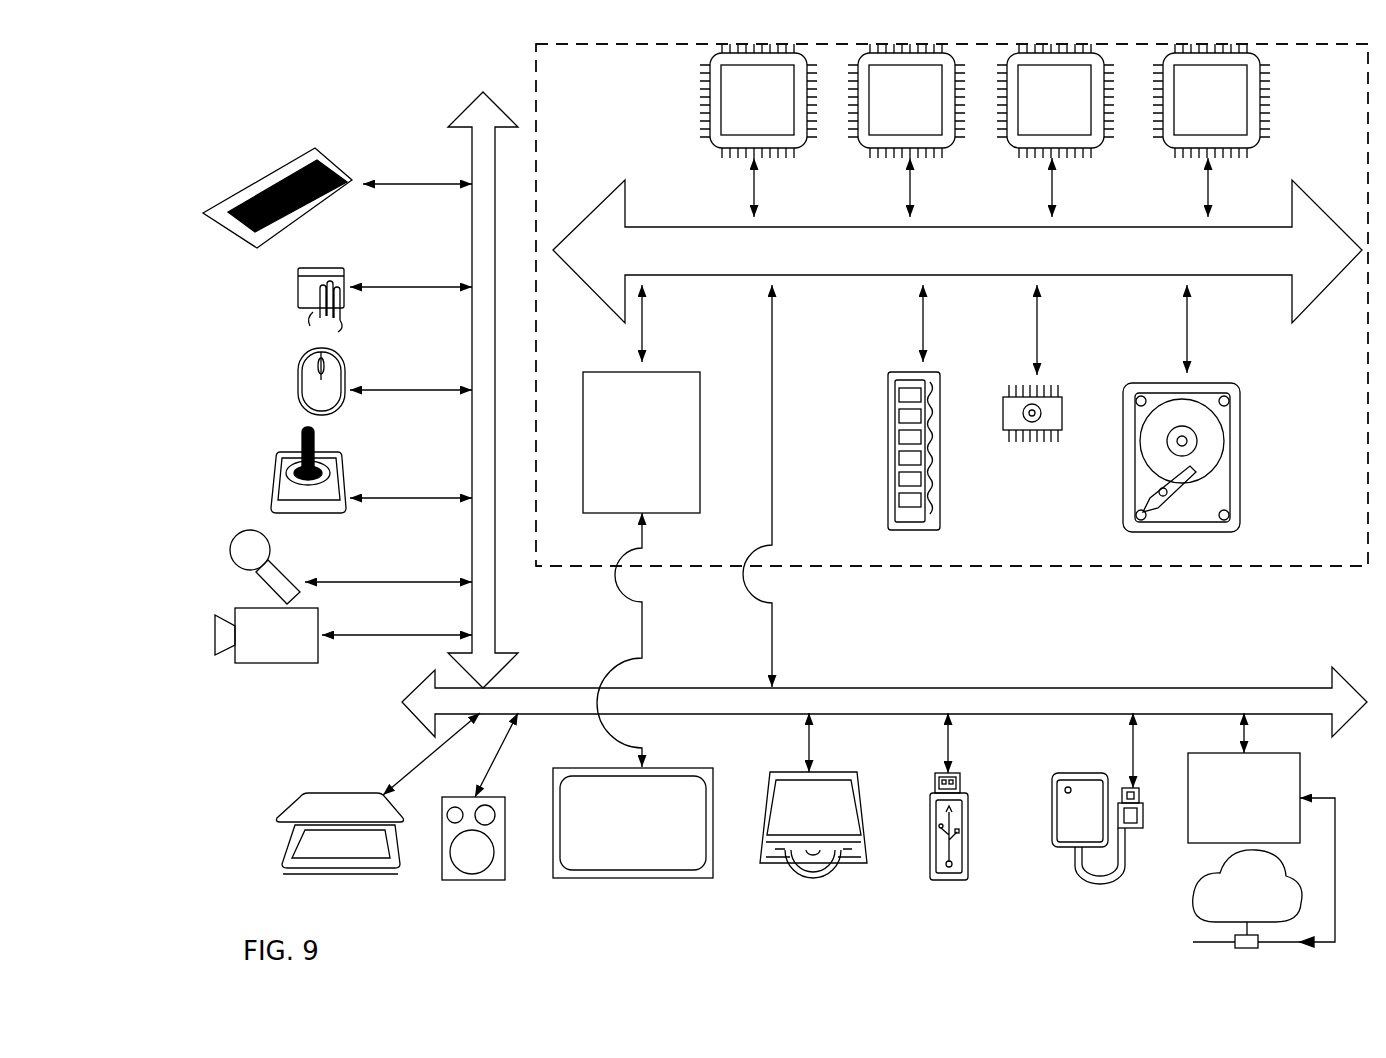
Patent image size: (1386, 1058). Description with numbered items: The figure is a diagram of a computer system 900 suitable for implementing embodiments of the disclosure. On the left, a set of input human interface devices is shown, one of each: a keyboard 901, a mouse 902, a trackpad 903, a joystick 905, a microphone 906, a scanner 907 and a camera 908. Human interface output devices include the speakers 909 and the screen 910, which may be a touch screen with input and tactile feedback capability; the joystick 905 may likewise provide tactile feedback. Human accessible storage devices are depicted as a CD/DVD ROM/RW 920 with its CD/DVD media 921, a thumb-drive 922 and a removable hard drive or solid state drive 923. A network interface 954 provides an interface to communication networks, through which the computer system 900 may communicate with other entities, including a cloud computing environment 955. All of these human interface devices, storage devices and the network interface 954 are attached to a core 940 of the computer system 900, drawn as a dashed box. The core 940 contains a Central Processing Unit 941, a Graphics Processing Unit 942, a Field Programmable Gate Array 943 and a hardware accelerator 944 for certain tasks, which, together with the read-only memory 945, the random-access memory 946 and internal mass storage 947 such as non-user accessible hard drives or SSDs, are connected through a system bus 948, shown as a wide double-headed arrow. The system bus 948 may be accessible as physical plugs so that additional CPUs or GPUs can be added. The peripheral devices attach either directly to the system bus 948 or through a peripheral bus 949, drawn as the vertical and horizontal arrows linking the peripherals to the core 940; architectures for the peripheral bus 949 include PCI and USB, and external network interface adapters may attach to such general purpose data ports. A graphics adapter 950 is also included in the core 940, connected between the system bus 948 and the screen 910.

The computer system 900 is at (796, 305).
The keyboard 901 is at (205, 212).
The mouse 902 is at (290, 385).
The trackpad 903 is at (290, 298).
The joystick 905 is at (272, 493).
The microphone 906 is at (230, 565).
The scanner 907 is at (280, 860).
The camera 908 is at (215, 635).
The speakers 909 is at (472, 881).
The touch screen 910 is at (625, 878).
The CD/DVD ROM/RW 920 is at (852, 870).
The CD/DVD media 921 is at (790, 875).
The thumb-drive 922 is at (945, 880).
The removable hard drive or solid state drive 923 is at (1060, 848).
The core 940 is at (975, 567).
The Central Processing Unit 941 is at (758, 130).
The Graphics Processing Unit 942 is at (906, 130).
The Field Programmable Gate Array 943 is at (1055, 130).
The hardware accelerator 944 is at (1211, 130).
The Read-only memory 945 is at (1025, 442).
The Random-access memory 946 is at (888, 445).
The internal mass storage 947 is at (1145, 382).
The system bus 948 is at (957, 251).
The peripheral bus 949 is at (472, 130).
The graphics adapter 950 is at (641, 526).
The network interface 954 is at (1244, 778).
The cloud computing environment 955 is at (1195, 905).